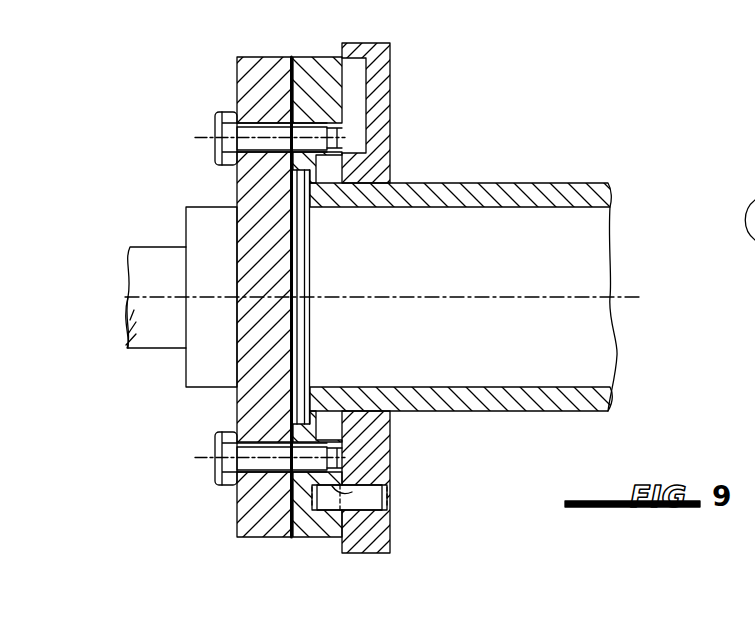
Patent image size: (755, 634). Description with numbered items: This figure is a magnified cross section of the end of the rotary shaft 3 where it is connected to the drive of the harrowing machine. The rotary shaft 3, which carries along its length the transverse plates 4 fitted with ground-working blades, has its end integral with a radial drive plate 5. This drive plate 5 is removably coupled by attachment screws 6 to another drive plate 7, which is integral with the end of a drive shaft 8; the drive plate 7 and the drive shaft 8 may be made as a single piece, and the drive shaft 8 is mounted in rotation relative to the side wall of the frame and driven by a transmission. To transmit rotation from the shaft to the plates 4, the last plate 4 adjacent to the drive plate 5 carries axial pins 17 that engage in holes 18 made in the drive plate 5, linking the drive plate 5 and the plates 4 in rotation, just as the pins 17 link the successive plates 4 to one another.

The rotary shaft 3 is at (520, 195).
The plate 4 is at (388, 83).
The radial drive plate 5 is at (316, 72).
The attachment screws 6 is at (255, 143).
The drive plate 7 is at (258, 507).
The drive shaft 8 is at (147, 262).
The axial pins 17 is at (370, 497).
The holes 18 is at (372, 476).